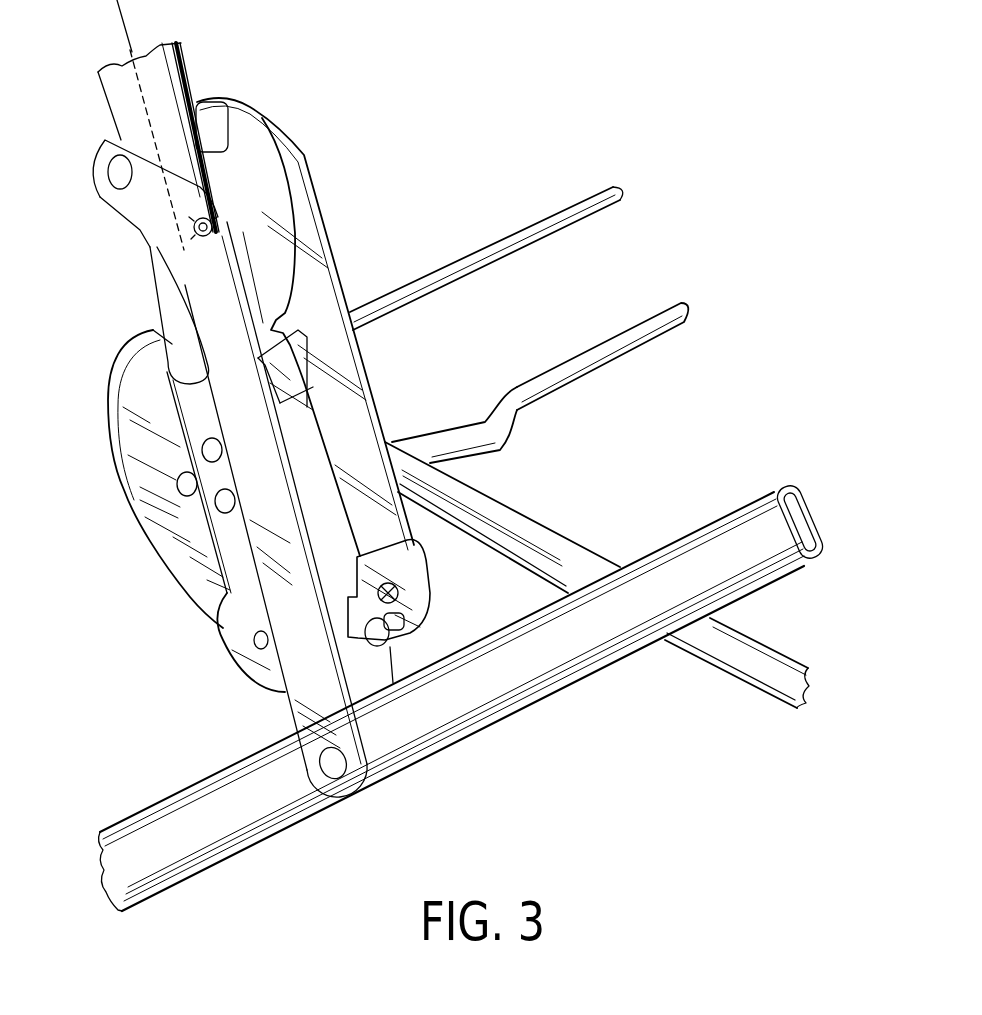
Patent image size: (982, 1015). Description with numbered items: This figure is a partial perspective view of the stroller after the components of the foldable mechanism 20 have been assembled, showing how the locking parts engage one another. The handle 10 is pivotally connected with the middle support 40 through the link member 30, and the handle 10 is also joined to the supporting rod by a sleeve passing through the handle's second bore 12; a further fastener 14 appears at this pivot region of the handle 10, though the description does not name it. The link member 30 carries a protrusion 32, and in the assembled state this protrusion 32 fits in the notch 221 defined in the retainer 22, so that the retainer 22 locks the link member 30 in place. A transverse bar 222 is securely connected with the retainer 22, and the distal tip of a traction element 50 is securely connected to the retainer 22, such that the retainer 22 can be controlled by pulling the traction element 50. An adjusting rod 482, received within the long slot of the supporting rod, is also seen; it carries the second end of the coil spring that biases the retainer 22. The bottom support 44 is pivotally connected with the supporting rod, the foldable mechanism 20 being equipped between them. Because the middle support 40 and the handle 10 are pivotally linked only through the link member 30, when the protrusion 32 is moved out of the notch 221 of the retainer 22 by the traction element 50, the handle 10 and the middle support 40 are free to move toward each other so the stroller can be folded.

The handle 10 is at (104, 98).
The second bore 12 is at (156, 270).
The pivot screw 14 is at (222, 193).
The foldable mechanism 20 is at (137, 463).
The retainer 22 is at (418, 588).
The notch 221 is at (403, 627).
The transverse bar 222 is at (660, 320).
The link member 30 is at (208, 222).
The protrusion 32 is at (390, 647).
The middle support 40 is at (554, 682).
The bottom support 44 is at (720, 660).
The adjusting rod 482 is at (563, 221).
The traction element 50 is at (283, 322).